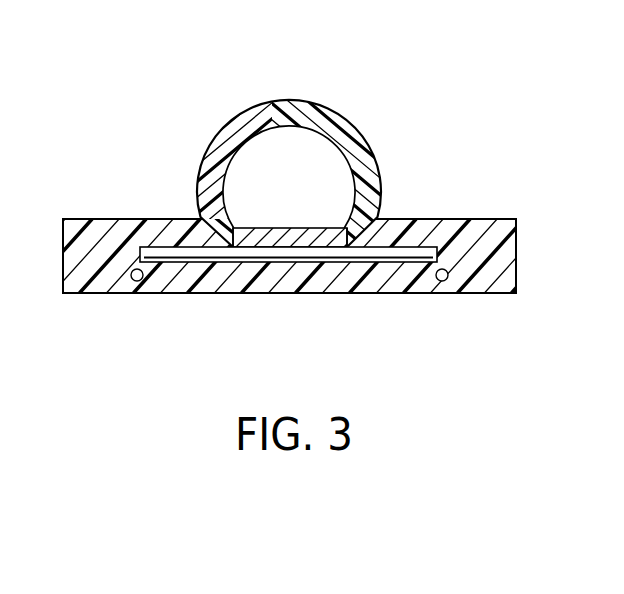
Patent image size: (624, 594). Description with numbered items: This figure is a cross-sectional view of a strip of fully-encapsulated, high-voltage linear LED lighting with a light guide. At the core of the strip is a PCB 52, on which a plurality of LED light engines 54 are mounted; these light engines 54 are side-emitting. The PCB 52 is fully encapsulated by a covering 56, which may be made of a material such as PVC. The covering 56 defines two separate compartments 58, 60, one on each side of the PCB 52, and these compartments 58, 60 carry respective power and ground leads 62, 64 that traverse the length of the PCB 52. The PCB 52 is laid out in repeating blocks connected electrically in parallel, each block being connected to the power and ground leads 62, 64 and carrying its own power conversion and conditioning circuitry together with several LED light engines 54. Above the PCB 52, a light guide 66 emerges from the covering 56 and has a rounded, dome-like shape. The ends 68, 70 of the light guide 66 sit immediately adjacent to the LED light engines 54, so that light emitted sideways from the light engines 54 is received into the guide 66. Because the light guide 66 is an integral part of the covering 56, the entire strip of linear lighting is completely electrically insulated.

The PCB 52 is at (267, 262).
The LED light engines 54 is at (285, 228).
The covering 56 is at (96, 219).
The compartment 58 is at (141, 282).
The compartment 60 is at (436, 283).
The power lead 62 is at (136, 283).
The ground lead 64 is at (450, 284).
The light guide 66 is at (289, 100).
The end of the light guide 68 is at (234, 228).
The end of the light guide 70 is at (346, 228).